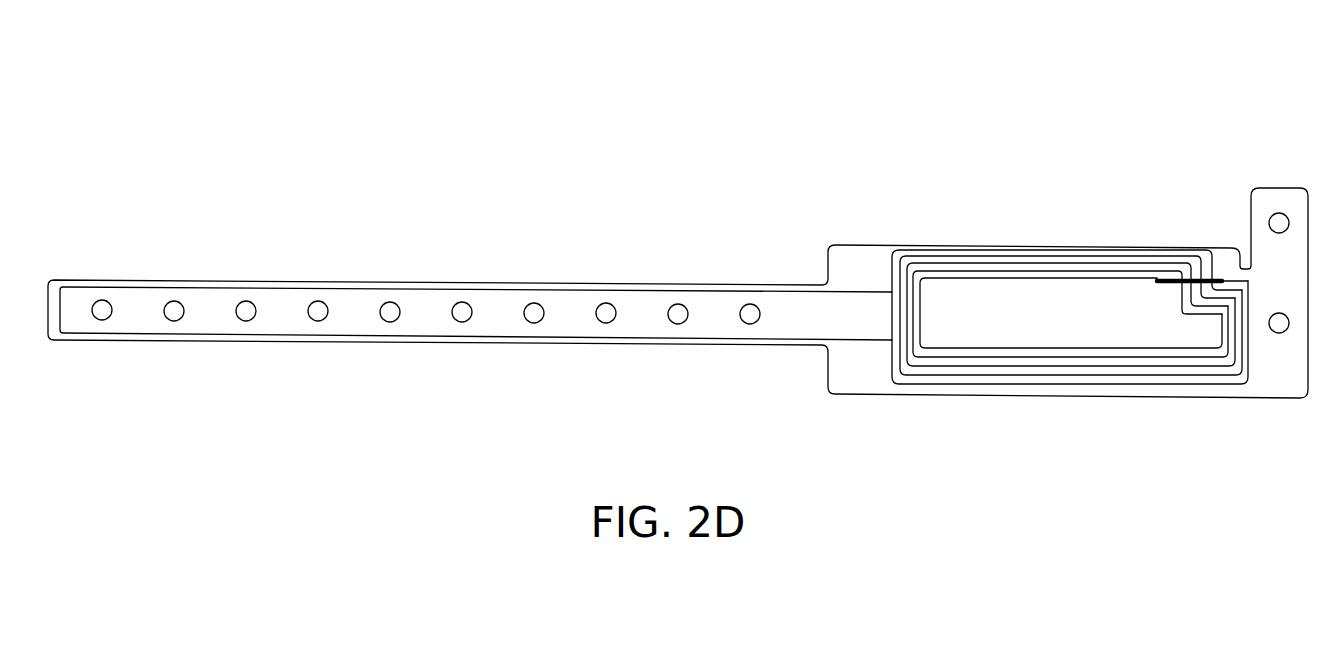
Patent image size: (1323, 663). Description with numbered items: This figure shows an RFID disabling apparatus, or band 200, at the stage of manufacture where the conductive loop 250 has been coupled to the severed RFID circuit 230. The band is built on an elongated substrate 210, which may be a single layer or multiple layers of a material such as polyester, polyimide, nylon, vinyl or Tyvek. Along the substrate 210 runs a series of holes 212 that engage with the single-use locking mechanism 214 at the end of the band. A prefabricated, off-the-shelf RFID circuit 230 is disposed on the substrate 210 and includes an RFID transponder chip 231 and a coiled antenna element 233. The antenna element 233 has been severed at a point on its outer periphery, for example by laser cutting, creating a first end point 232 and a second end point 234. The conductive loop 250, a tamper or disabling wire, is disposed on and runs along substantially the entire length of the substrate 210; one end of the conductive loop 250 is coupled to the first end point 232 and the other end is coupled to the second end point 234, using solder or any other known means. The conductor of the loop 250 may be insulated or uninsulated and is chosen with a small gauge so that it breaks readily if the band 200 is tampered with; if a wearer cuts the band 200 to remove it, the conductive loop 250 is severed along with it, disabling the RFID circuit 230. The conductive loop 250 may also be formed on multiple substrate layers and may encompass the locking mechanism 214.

The RFID disabling apparatus (band) 200 is at (714, 90).
The substrate 210 is at (350, 283).
The holes 212 is at (107, 318).
The single-use locking mechanism 214 is at (1279, 234).
The RFID circuit (tag) 230 is at (893, 252).
The RFID transponder chip 231 is at (1181, 285).
The first end point 232 is at (888, 288).
The antenna element 233 is at (1013, 260).
The second end point 234 is at (884, 348).
The conductive loop 250 is at (538, 344).